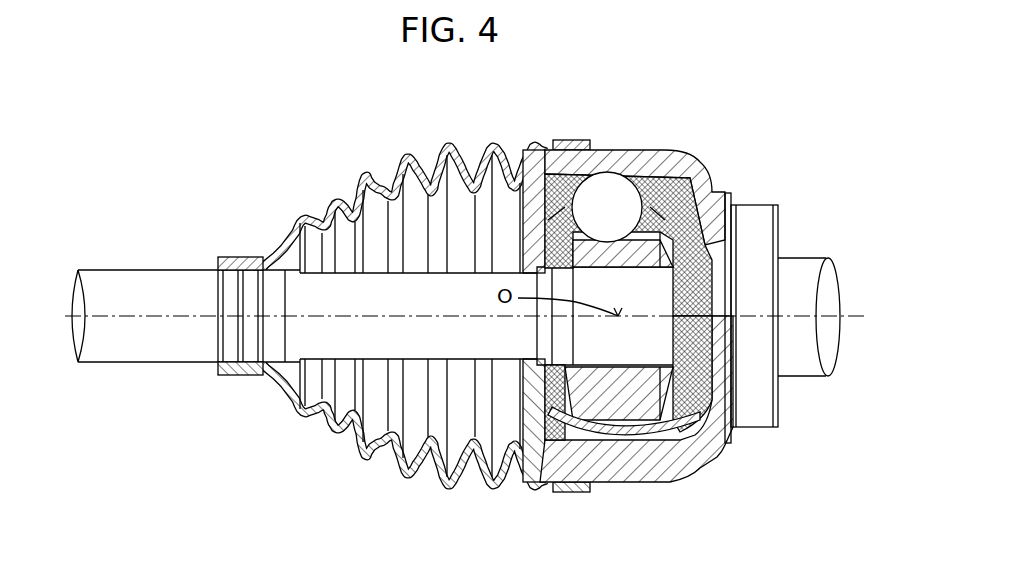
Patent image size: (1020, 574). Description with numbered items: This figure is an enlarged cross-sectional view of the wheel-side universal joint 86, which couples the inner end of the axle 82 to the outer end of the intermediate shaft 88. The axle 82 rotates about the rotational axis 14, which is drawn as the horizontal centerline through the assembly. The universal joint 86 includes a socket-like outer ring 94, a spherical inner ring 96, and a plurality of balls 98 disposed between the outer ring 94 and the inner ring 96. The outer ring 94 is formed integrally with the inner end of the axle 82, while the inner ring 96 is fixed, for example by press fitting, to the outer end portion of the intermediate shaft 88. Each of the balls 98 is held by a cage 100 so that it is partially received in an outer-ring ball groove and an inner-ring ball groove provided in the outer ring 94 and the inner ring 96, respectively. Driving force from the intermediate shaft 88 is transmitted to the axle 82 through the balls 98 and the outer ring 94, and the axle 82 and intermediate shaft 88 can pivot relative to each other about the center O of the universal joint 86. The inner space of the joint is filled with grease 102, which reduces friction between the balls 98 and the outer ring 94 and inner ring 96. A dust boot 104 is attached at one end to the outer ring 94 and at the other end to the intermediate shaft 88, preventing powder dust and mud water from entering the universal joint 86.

The rotational axis 14 is at (812, 316).
The axle 82 is at (803, 265).
The universal joint 86 is at (674, 318).
The intermediate shaft 88 is at (139, 278).
The outer ring 94 is at (672, 483).
The inner ring 96 is at (610, 432).
The balls 98 is at (608, 190).
The cage 100 is at (703, 160).
The grease 102 is at (540, 240).
The dust boot 104 is at (362, 176).